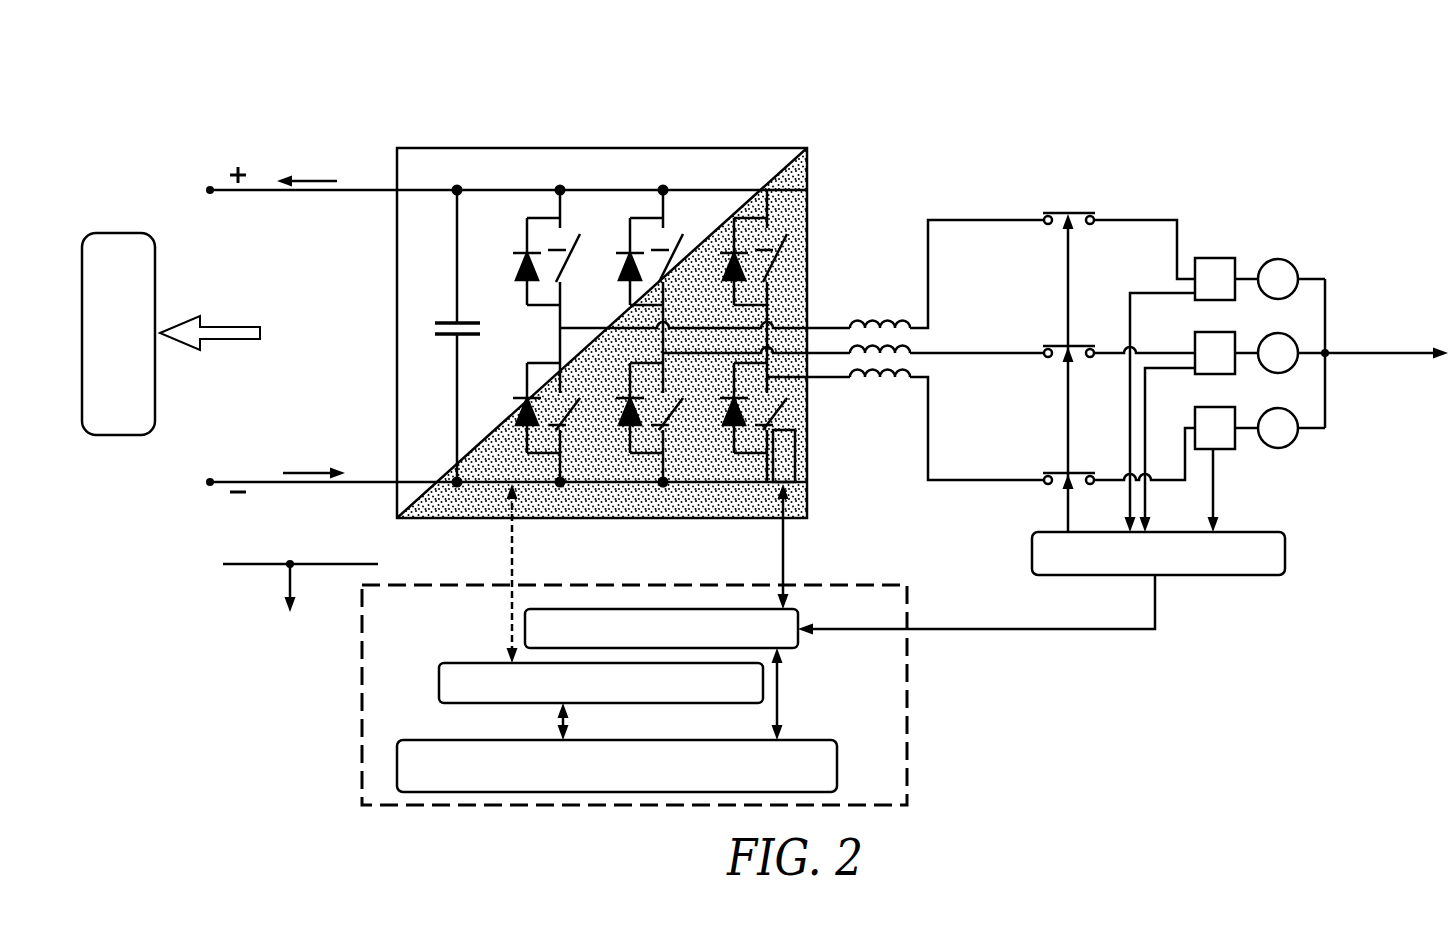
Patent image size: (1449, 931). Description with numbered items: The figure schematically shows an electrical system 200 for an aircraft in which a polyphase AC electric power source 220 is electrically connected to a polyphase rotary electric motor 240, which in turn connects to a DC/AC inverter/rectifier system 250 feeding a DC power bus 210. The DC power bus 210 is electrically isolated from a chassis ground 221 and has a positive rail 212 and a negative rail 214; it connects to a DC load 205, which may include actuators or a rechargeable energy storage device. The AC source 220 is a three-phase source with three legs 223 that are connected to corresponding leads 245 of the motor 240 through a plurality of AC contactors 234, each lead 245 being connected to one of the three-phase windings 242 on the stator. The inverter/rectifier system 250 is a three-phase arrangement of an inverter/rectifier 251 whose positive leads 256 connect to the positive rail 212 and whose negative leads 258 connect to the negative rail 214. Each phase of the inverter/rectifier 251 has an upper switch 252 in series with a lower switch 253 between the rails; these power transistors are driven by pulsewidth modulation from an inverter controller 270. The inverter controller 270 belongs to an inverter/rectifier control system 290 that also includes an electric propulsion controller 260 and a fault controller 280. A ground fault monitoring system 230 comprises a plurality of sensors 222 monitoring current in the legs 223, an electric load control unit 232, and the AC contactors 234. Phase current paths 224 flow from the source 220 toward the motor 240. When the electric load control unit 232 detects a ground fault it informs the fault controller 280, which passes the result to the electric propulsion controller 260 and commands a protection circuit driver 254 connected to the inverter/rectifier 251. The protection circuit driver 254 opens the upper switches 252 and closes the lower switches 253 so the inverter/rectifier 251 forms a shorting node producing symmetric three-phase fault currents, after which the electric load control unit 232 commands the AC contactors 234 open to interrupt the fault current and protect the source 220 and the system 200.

The electrical system 200 is at (318, 88).
The DC load 205 is at (139, 350).
The DC power bus 210 is at (355, 345).
The positive rail 212 is at (258, 158).
The negative rail 214 is at (259, 528).
The polyphase AC electric power source 220 is at (1343, 268).
The chassis ground 221 is at (310, 644).
The sensors 222 is at (1213, 332).
The legs 223 is at (1250, 284).
The AC phase line 224 is at (1195, 210).
The ground fault monitoring system 230 is at (1173, 598).
The electric load control unit (ELCU) 232 is at (1255, 571).
The AC contactors 234 is at (1050, 212).
The polyphase rotary electric motor 240 is at (906, 316).
The 3-phase windings 242 is at (906, 419).
The leads 245 is at (985, 220).
The DC/AC inverter/rectifier system 250 is at (493, 140).
The inverter/rectifier 251 is at (808, 190).
The upper switch 252 is at (755, 250).
The lower switch 253 is at (755, 425).
The protection circuit driver 254 is at (796, 460).
The positive leads 256 is at (423, 190).
The negative leads 258 is at (405, 482).
The electric propulsion controller 260 is at (825, 780).
The inverter controller 270 is at (755, 698).
The fault controller 280 is at (785, 644).
The inverter/rectifier control system 290 is at (897, 796).